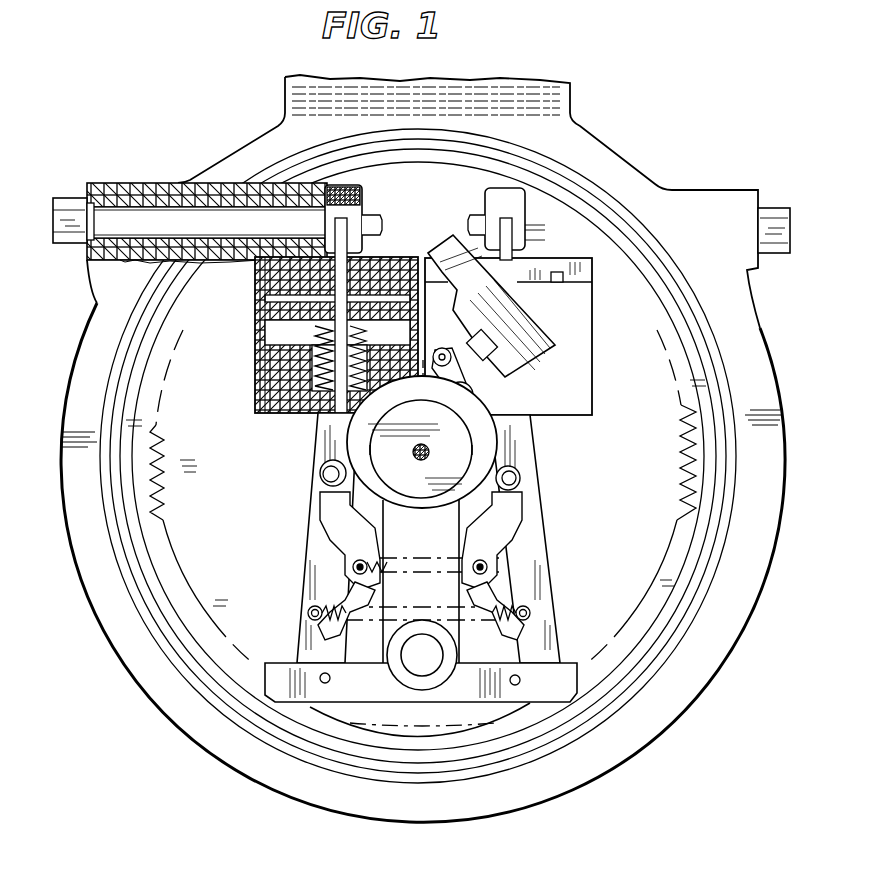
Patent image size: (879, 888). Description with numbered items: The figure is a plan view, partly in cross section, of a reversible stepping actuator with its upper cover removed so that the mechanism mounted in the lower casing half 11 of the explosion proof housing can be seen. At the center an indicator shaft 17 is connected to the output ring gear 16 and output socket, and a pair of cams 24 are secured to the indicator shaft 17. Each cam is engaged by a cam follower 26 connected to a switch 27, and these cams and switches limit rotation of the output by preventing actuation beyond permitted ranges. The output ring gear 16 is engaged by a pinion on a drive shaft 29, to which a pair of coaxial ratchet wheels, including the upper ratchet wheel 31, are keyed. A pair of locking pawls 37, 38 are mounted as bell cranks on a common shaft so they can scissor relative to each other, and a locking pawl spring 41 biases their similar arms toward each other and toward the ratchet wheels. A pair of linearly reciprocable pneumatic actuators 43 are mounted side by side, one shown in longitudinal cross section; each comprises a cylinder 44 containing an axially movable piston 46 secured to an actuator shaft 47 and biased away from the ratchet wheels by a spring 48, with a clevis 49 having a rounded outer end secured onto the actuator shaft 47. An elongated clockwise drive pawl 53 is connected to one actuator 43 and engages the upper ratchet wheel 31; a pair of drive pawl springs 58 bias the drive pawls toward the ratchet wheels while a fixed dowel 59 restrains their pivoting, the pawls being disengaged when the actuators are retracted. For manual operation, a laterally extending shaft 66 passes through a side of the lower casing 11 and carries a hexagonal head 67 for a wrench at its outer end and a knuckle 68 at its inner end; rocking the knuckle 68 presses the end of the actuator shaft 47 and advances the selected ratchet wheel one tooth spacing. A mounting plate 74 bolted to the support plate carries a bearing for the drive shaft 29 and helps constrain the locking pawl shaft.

The lower casing half 11 is at (680, 700).
The output ring gear 16 is at (162, 452).
The indicator shaft 17 is at (422, 460).
The cam 24 is at (497, 445).
The cam follower 26 is at (473, 394).
The switch 27 is at (538, 318).
The drive shaft 29 is at (433, 660).
The upper ratchet wheel 31 is at (450, 738).
The locking pawl 37 is at (332, 496).
The locking pawl 38 is at (368, 556).
The locking pawl spring 41 is at (521, 547).
The pneumatic actuator 43 is at (409, 331).
The cylinder 44 is at (268, 390).
The piston 46 is at (265, 330).
The actuator shaft 47 is at (357, 232).
The spring 48 is at (318, 368).
The clevis 49 is at (423, 538).
The clockwise drive pawl 53 is at (538, 588).
The drive pawl spring 58 is at (322, 632).
The fixed dowel 59 is at (332, 682).
The laterally extending shaft 66 is at (118, 207).
The hexagonal head 67 is at (72, 198).
The knuckle 68 is at (362, 195).
The mounting plate 74 is at (563, 690).